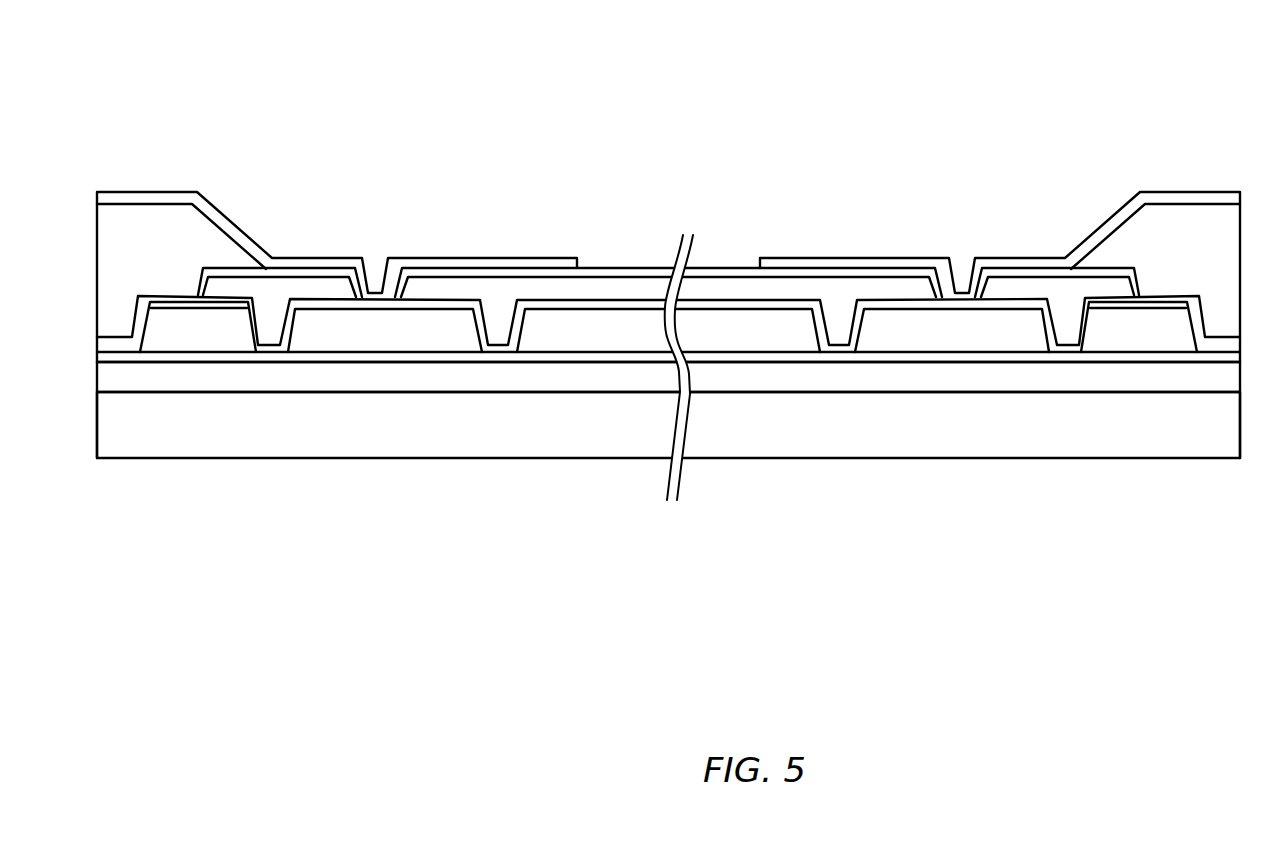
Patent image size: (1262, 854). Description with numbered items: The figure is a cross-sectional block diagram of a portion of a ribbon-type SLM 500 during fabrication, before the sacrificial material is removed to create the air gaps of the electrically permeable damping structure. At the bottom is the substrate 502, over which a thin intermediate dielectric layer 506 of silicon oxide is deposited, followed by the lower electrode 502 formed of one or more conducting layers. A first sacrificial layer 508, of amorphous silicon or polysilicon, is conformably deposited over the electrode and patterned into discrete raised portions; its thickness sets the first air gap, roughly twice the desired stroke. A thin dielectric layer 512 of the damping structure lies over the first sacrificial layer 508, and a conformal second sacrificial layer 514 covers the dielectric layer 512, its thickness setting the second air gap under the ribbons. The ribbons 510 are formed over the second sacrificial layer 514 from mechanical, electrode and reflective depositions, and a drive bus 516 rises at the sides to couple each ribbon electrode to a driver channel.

The ribbon-type SLM 500 is at (273, 47).
The lower electrode 502 is at (931, 360).
The intermediate dielectric layer 506 is at (668, 377).
The first sacrificial layer 508 is at (668, 327).
The ribbons 510 is at (603, 268).
The dielectric layer 512 is at (753, 310).
The second sacrificial layer 514 is at (668, 308).
The drive bus 516 is at (235, 223).